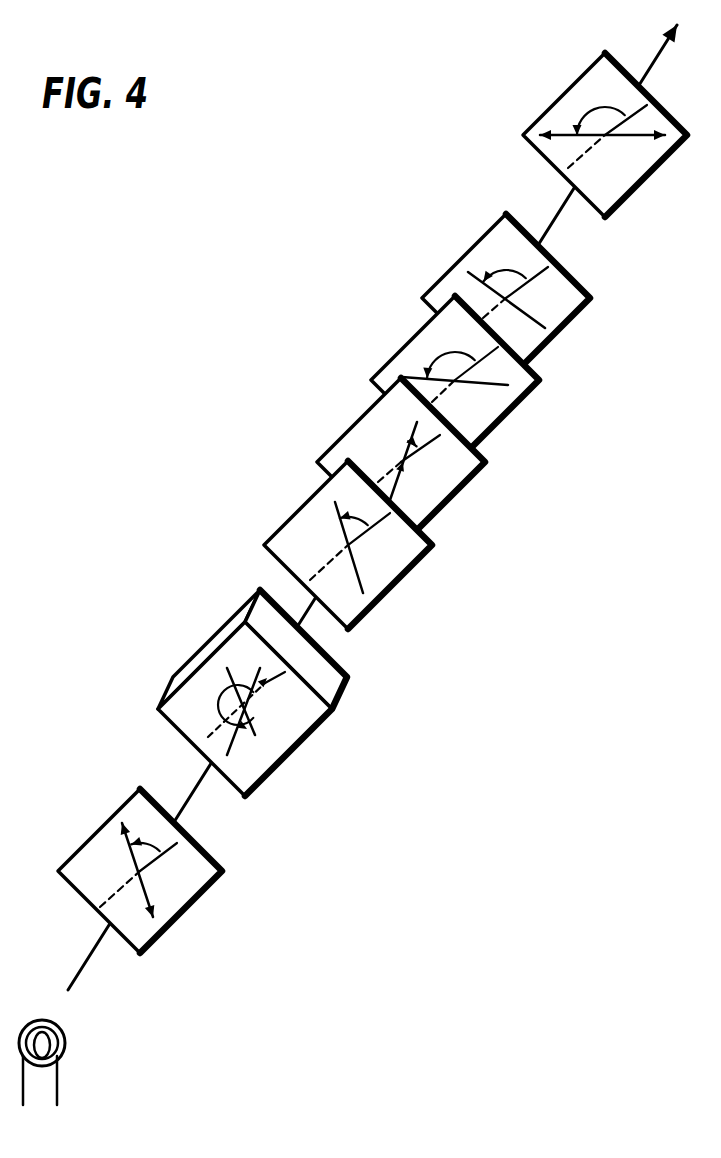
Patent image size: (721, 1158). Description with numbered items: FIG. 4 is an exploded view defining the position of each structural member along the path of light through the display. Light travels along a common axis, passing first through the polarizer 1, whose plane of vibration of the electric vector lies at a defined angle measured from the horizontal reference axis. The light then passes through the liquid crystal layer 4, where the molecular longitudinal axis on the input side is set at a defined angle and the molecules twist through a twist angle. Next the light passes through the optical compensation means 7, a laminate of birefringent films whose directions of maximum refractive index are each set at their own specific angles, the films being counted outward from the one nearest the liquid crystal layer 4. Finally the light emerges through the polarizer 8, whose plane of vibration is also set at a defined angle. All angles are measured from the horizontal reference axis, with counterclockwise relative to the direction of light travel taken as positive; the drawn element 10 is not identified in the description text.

The polarizer 1 is at (143, 932).
The liquid crystal layer 4 is at (258, 762).
The optical compensation means 7 is at (645, 298).
The polarizer 8 is at (617, 177).
The light source 10 is at (65, 1035).